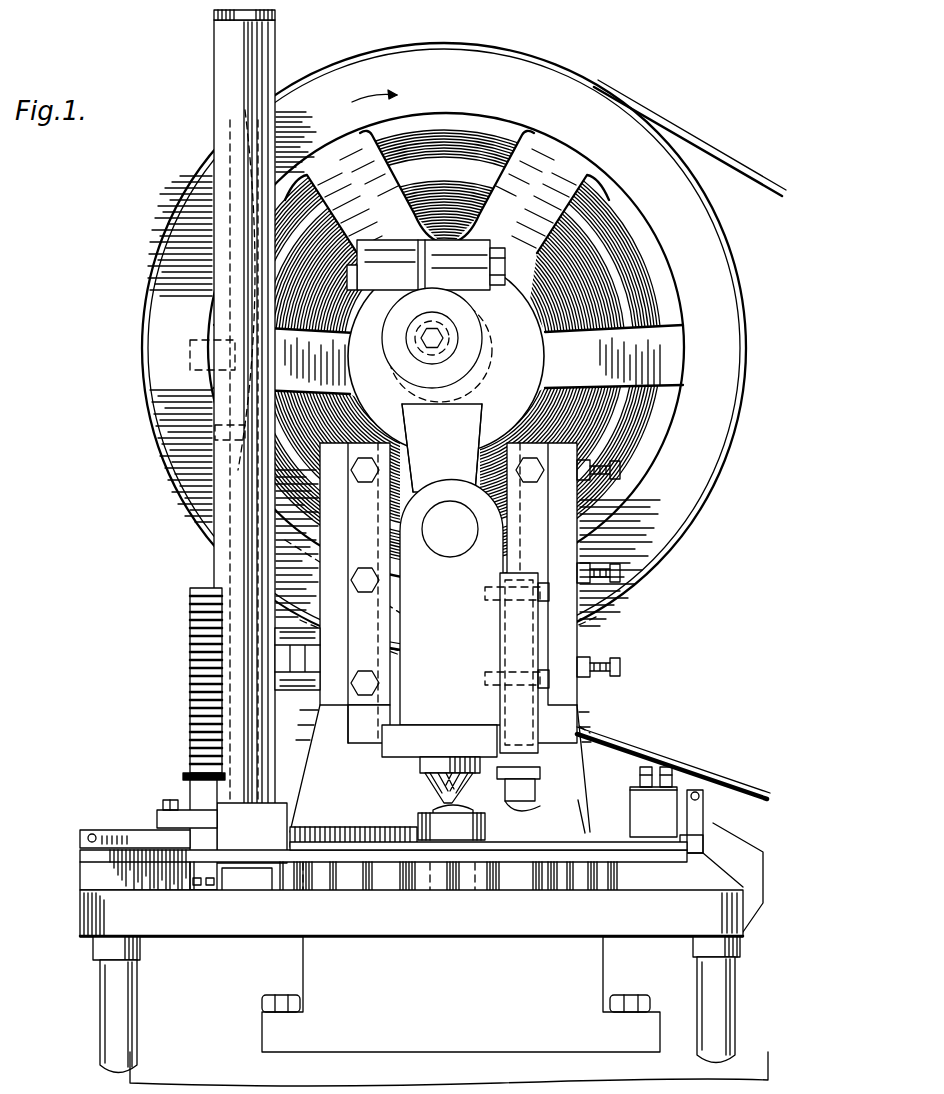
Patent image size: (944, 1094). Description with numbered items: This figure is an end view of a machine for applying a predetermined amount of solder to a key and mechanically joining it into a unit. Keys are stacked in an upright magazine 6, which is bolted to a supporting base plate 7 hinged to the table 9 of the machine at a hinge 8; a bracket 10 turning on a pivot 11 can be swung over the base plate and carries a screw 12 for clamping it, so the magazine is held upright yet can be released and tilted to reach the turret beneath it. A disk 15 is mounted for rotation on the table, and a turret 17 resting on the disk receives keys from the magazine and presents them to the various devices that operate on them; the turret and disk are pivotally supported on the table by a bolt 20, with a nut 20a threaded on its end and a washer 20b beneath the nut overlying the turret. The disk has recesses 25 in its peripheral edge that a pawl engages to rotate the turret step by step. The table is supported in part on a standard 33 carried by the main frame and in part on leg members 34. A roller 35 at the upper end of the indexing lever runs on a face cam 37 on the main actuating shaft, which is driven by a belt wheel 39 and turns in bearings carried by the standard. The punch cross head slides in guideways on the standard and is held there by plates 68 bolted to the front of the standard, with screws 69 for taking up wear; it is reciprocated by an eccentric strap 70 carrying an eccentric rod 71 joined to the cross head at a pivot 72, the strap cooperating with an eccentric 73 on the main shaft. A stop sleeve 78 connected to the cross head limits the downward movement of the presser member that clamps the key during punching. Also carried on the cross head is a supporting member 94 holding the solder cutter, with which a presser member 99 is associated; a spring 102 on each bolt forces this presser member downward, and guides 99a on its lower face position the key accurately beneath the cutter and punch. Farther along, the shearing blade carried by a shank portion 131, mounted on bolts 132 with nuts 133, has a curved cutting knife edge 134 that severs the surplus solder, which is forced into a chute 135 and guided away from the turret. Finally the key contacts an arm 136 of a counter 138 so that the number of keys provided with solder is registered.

The magazine 6 is at (237, 255).
The supporting base plate 7 is at (140, 814).
The hinge 8 is at (88, 838).
The table 9 is at (100, 920).
The bracket 10 is at (198, 855).
The pivot 11 is at (206, 886).
The screw 12 is at (192, 776).
The disk 15 is at (355, 880).
The turret 17 is at (314, 850).
The bolt 20 is at (470, 905).
The nut 20a is at (437, 808).
The washer 20b is at (423, 838).
The recesses 25 is at (370, 880).
The standard 33 is at (449, 1011).
The leg members 34 is at (138, 1003).
The roller 35 is at (190, 385).
The face cam 37 is at (625, 298).
The belt wheel 39 is at (440, 369).
The plates 68 is at (340, 538).
The screws 69 is at (621, 574).
The eccentric strap 70 is at (490, 352).
The eccentric rod 71 is at (442, 448).
The pivot 72 is at (442, 619).
The eccentric 73 is at (446, 356).
The stop sleeve 78 is at (448, 768).
The supporting member 94 is at (512, 627).
The presser member 99 is at (560, 782).
The guides 99a is at (528, 806).
The spring 102 is at (582, 730).
The shank portion 131 is at (588, 832).
The bolts 132 is at (661, 766).
The nuts 133 is at (680, 786).
The curved cutting knife edge 134 is at (658, 812).
The chute 135 is at (733, 877).
The arm 136 is at (705, 840).
The counter 138 is at (702, 795).